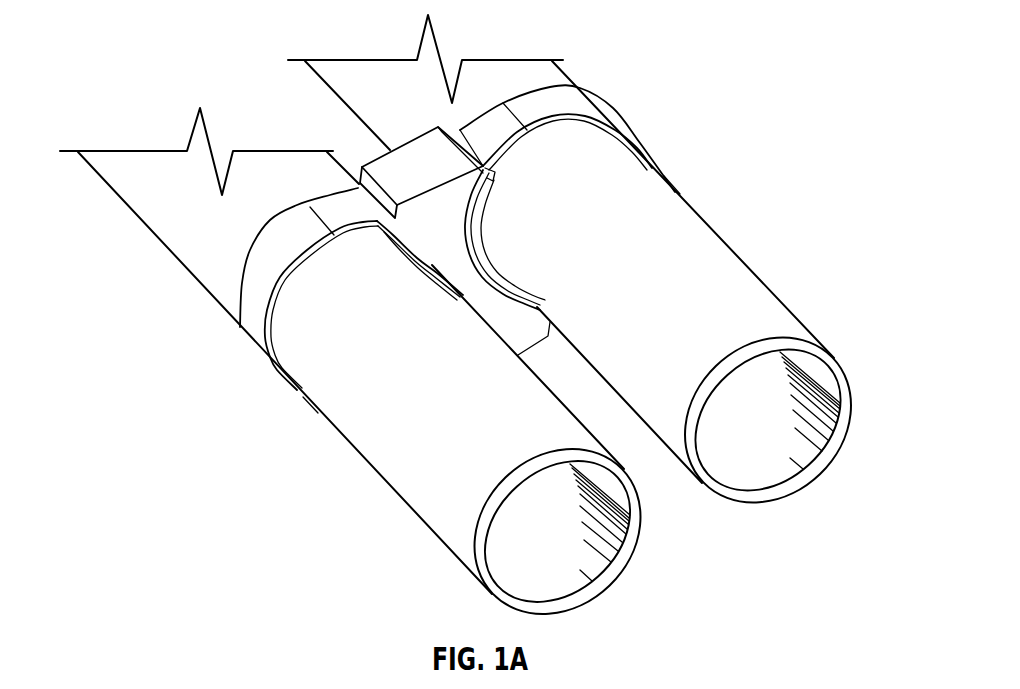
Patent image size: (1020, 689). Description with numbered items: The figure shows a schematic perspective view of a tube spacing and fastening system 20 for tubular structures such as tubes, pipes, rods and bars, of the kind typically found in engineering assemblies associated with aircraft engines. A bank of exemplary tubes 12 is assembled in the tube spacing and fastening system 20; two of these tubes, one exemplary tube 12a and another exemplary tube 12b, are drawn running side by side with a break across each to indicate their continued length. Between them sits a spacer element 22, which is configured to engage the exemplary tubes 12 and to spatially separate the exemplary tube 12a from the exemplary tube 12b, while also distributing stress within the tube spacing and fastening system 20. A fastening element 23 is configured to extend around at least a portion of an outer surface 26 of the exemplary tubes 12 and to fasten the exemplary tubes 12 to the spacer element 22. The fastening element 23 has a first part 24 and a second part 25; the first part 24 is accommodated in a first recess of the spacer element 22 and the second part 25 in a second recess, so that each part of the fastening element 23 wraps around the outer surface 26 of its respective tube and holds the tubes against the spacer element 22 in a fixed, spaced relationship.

The exemplary tubes 12 is at (830, 367).
The exemplary tube 12a is at (380, 458).
The exemplary tube 12b is at (591, 275).
The tube spacing and fastening system 20 is at (162, 40).
The spacer element 22 is at (364, 147).
The fastening element 23 is at (620, 123).
The first part 24 is at (363, 234).
The second part 25 is at (499, 168).
The outer surface 26 is at (670, 181).